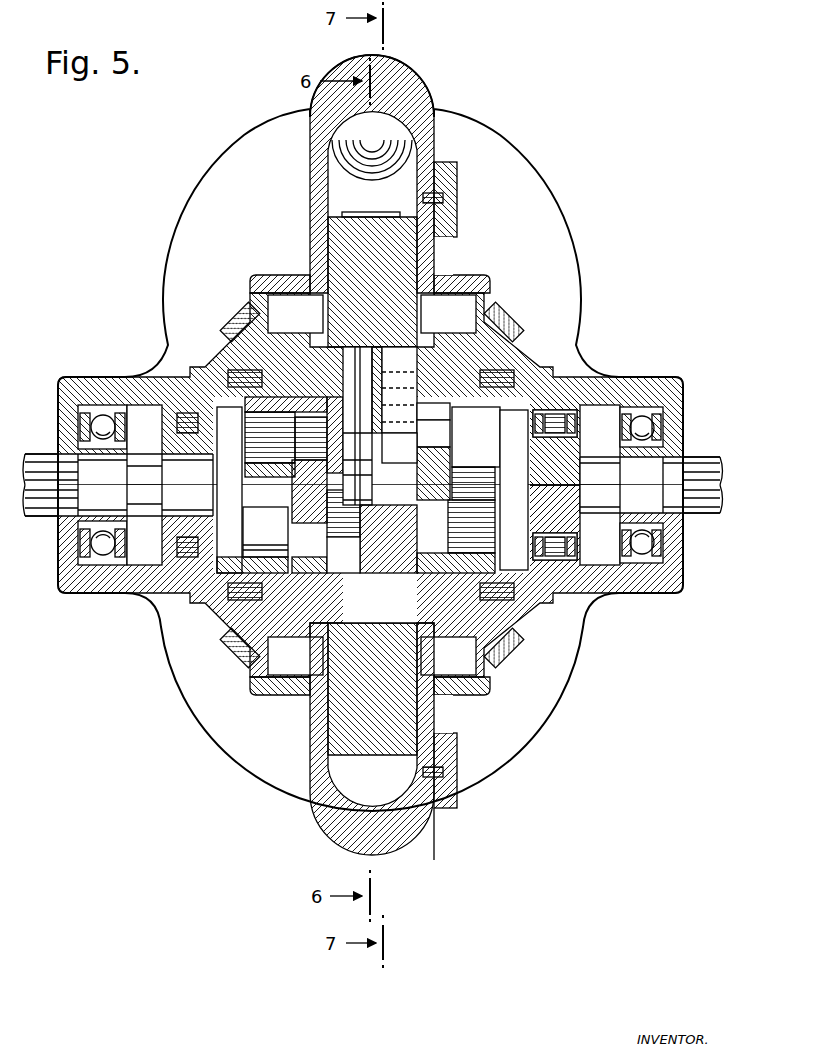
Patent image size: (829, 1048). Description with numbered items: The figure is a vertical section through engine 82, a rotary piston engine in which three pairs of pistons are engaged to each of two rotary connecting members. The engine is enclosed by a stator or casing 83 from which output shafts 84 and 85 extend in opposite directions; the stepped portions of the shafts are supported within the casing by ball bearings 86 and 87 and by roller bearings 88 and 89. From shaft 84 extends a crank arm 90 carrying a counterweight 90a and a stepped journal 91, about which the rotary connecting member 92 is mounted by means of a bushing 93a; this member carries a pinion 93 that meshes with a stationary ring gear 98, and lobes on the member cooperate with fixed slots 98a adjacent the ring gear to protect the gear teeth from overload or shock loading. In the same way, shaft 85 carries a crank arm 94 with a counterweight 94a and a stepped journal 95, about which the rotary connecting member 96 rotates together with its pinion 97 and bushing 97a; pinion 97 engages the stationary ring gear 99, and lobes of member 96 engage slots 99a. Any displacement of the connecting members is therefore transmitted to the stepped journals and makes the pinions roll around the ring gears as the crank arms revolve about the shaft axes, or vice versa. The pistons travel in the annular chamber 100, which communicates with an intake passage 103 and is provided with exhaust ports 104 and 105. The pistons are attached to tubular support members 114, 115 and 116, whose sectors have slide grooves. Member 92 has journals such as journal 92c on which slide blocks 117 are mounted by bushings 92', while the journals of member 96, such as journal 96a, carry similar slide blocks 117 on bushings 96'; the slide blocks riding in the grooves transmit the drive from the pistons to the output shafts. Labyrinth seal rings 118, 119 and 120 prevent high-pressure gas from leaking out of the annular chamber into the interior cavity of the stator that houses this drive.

The engine 82 is at (580, 250).
The stator or casing 83 is at (617, 392).
The output shaft 84 is at (698, 465).
The output shaft 85 is at (48, 502).
The ball bearing 86 is at (647, 594).
The ball bearing 87 is at (93, 591).
The roller bearing 88 is at (573, 597).
The roller bearing 89 is at (165, 593).
The crank arm 90 is at (518, 494).
The counterweight 90a is at (517, 437).
The stepped journal 91 is at (433, 528).
The rotary connecting member 92 is at (472, 455).
The bushing 92' is at (432, 433).
The journal 92c is at (396, 458).
The pinion 93 is at (509, 455).
The bushing 93a is at (511, 523).
The crank arm 94 is at (236, 437).
The counterweight 94a is at (267, 535).
The stepped journal 95 is at (229, 457).
The rotary connecting member 96 is at (307, 535).
The bushing 96' is at (317, 458).
The journal 96a is at (344, 513).
The pinion 97 is at (252, 487).
The bushing 97a is at (266, 468).
The stationary ring gear 98 is at (507, 387).
The slots 98a is at (431, 414).
The stationary ring gear 99 is at (258, 498).
The slots 99a is at (290, 316).
The annular chamber 100 is at (414, 234).
The intake passage 103 is at (273, 307).
The exhaust port 104 is at (404, 132).
The exhaust port 105 is at (350, 797).
The tubular support member 114 is at (399, 384).
The tubular support member 115 is at (353, 612).
The tubular support member 116 is at (377, 362).
The slide block 117 is at (370, 491).
The labyrinth seal ring 118 is at (300, 292).
The labyrinth seal ring 119 is at (345, 312).
The labyrinth seal ring 120 is at (381, 343).